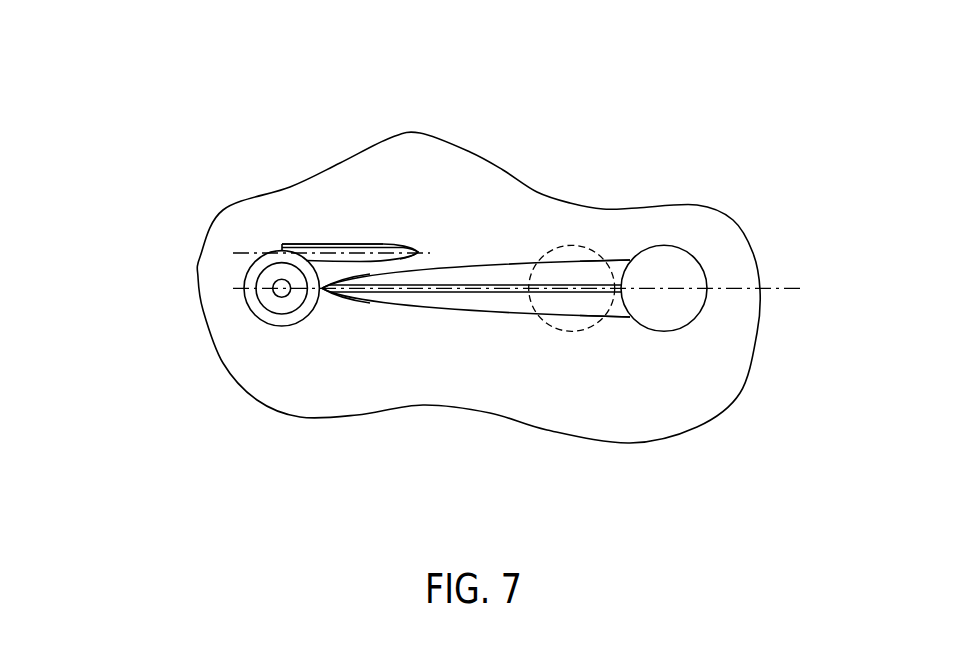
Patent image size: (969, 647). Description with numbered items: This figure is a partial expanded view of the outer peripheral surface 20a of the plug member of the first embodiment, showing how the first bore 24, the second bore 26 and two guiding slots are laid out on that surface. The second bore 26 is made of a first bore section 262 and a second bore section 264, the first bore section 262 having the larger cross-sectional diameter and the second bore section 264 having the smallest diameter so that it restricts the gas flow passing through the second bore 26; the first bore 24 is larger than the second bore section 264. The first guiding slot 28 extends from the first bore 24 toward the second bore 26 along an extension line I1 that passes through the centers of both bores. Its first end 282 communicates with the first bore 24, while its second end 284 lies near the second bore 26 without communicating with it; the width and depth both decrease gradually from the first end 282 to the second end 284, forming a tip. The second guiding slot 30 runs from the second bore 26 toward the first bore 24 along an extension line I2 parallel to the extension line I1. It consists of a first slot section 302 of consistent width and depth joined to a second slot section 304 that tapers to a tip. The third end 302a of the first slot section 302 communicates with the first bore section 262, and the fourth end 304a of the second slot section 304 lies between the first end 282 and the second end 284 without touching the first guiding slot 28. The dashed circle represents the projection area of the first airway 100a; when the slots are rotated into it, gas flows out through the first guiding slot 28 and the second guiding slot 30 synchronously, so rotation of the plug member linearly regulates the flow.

The outer peripheral surface 20a is at (687, 378).
The first bore 24 is at (672, 245).
The second bore 26 is at (182, 314).
The first bore section 262 is at (270, 324).
The second bore section 264 is at (273, 285).
The first guiding slot 28 is at (471, 413).
The first end 282 is at (617, 315).
The second end 284 is at (322, 290).
The second guiding slot 30 is at (391, 131).
The first slot section 302 is at (333, 245).
The second slot section 304 is at (398, 245).
The third end 302a is at (295, 250).
The fourth end 304a is at (417, 253).
The first airway 100a is at (560, 245).
The extension line I1 is at (787, 287).
The extension line I2 is at (242, 255).